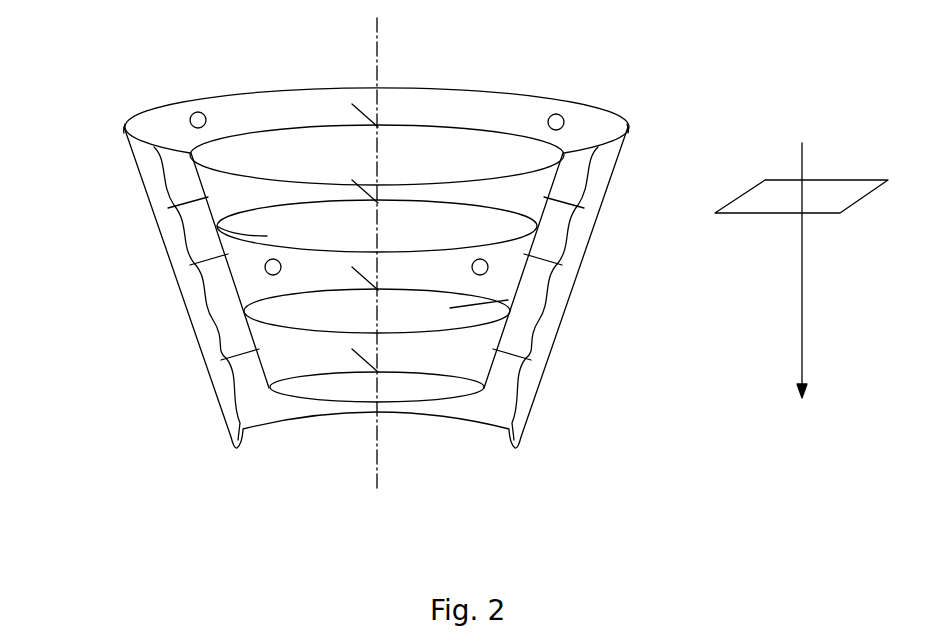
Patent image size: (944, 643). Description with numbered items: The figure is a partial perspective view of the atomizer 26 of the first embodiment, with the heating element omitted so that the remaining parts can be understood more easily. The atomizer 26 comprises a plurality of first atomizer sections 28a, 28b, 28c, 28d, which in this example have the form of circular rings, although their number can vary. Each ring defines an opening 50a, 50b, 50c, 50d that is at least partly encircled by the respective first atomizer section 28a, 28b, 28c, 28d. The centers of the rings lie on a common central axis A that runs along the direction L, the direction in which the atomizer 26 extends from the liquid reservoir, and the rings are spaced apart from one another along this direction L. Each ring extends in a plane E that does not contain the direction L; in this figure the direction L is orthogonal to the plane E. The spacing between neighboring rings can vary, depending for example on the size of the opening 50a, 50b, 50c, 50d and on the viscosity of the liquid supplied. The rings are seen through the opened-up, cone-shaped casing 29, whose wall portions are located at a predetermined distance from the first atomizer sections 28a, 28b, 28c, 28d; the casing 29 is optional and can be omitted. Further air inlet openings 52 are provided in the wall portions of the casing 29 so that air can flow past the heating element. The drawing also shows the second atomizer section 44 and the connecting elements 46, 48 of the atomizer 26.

The atomizer 26 is at (740, 54).
The first atomizer section 28a is at (377, 101).
The first atomizer section 28b is at (360, 219).
The first atomizer section 28c is at (452, 329).
The first atomizer section 28d is at (439, 445).
The casing 29 is at (602, 213).
The second atomizer section 44 is at (170, 215).
The connecting element 46 is at (125, 127).
The connecting element 48 is at (378, 92).
The opening 50a is at (263, 160).
The opening 50b is at (215, 224).
The opening 50c is at (520, 309).
The opening 50d is at (392, 388).
The air inlet opening 52 is at (190, 112).
The central axis A is at (376, 457).
The plane E is at (840, 193).
The direction L is at (814, 270).